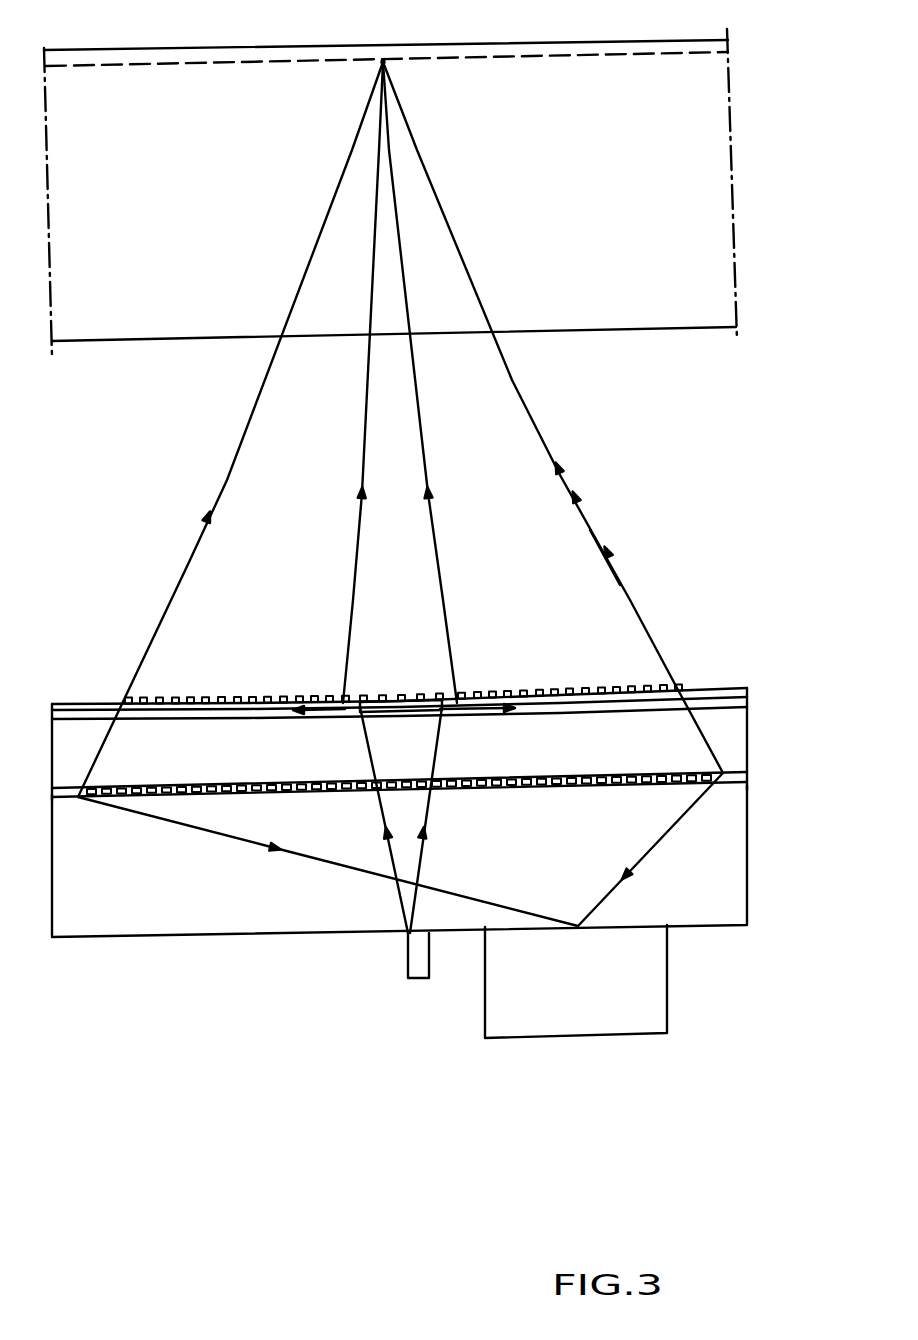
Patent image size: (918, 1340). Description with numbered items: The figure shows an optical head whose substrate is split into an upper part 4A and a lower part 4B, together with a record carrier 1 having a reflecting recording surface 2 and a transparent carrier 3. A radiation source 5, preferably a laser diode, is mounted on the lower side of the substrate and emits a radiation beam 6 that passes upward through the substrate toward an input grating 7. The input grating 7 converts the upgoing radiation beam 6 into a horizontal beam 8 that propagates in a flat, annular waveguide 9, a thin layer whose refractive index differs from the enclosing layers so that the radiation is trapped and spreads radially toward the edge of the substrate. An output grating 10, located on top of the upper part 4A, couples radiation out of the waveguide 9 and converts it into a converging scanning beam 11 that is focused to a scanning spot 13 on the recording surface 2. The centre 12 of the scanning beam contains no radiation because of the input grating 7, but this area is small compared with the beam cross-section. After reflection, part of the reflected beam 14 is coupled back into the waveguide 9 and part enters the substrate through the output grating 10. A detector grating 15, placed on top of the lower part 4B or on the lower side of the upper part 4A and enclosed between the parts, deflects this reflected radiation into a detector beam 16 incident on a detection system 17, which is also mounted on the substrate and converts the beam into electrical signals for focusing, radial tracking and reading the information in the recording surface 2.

The record carrier 1 is at (781, 30).
The reflecting recording surface 2 is at (690, 52).
The transparent carrier 3 is at (712, 268).
The upper part of the substrate 4A is at (733, 740).
The lower part of the substrate 4B is at (735, 888).
The radiation source 5 is at (418, 967).
The radiation beam 6 is at (400, 905).
The input grating 7 is at (399, 697).
The horizontal beam 8 is at (311, 697).
The waveguide 9 is at (748, 699).
The output grating 10 is at (633, 688).
The scanning beam 11 is at (576, 495).
The centre of the scanning beam 12 is at (408, 420).
The scanning spot 13 is at (386, 58).
The reflected beam 14 is at (610, 560).
The detector grating 15 is at (700, 783).
The detector beam 16 is at (252, 846).
The detection system 17 is at (657, 1017).